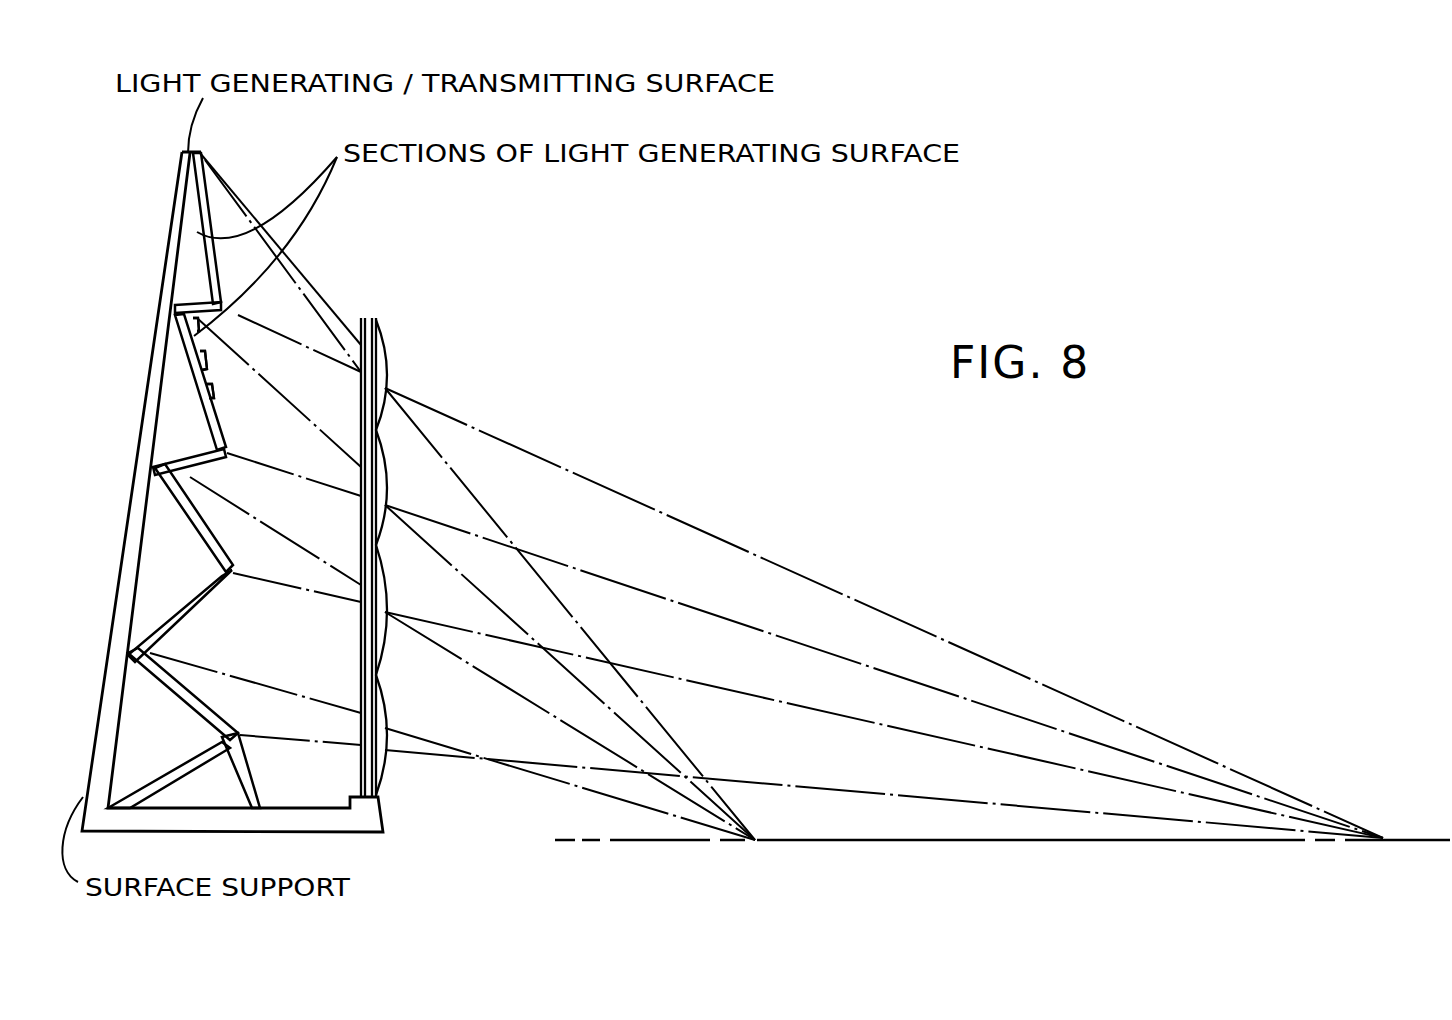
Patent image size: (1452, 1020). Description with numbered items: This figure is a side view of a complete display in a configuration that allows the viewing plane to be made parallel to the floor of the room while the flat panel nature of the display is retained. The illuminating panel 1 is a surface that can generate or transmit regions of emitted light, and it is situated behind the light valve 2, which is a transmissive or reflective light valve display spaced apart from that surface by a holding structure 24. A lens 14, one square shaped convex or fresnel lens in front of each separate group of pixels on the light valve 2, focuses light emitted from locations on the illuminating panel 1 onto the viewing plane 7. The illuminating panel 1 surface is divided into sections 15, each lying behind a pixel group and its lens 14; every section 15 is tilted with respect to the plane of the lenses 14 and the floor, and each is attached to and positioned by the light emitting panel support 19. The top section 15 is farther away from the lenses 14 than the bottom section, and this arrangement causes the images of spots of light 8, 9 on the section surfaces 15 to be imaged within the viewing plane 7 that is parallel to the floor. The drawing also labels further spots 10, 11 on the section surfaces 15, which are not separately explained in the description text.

The illuminating panel 1 is at (192, 152).
The light valve 2 is at (362, 315).
The viewing plane 7 is at (607, 843).
The spot of light 8 is at (207, 357).
The spot of light 9 is at (207, 357).
The light emitting element 10 is at (212, 394).
The light emitting element 11 is at (212, 394).
The lens 14 is at (387, 361).
The section of illuminating panel surface 15 is at (220, 282).
The light emitting panel support 19 is at (173, 203).
The holding structure 24 is at (372, 317).